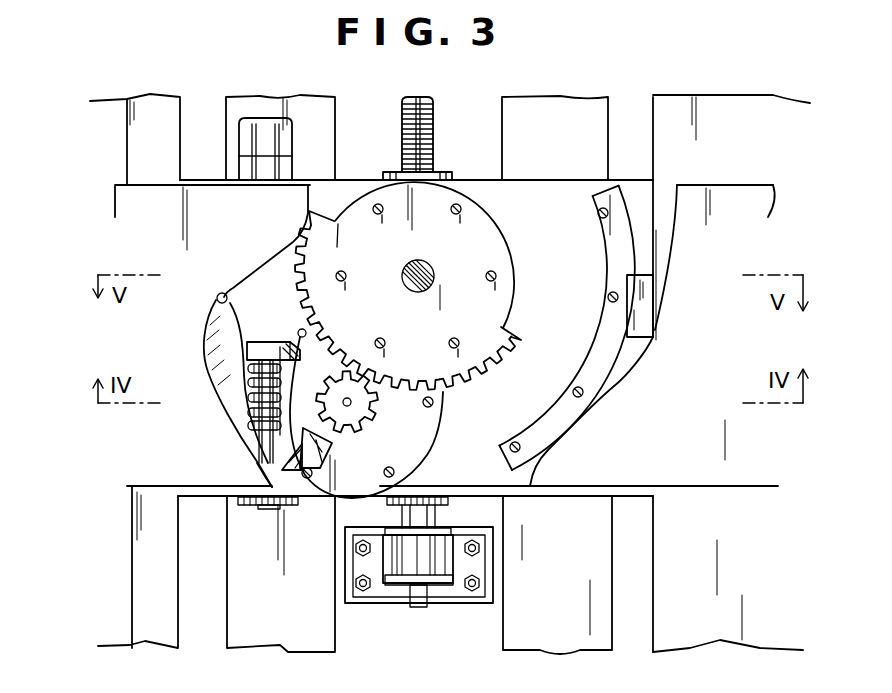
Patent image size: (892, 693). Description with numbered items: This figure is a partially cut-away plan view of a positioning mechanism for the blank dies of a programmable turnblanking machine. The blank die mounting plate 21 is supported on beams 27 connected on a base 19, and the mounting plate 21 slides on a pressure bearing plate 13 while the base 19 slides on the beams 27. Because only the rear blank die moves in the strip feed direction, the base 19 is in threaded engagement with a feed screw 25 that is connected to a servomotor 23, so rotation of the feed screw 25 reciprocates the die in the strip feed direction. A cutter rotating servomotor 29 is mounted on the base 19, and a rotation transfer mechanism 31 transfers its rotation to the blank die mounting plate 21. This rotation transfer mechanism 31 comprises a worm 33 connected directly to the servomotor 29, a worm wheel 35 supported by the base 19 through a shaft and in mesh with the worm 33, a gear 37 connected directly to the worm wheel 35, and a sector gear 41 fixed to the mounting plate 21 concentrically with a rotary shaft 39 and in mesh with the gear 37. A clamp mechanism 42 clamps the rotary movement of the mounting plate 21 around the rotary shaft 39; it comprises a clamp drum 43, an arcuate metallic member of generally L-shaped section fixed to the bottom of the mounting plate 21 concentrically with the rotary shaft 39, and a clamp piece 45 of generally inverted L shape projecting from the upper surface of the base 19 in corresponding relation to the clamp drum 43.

The pressure bearing plate 13 is at (152, 108).
The base 19 is at (480, 178).
The blank die mounting plate 21 is at (130, 195).
The servomotor 23 is at (440, 590).
The feed screw 25 is at (438, 84).
The beams 27 is at (545, 107).
The cutter rotating servomotor 29 is at (292, 143).
The rotation transfer mechanism 31 is at (293, 313).
The worm 33 is at (243, 432).
The worm wheel 35 is at (300, 332).
The gear 37 is at (381, 416).
The rotary shaft 39 is at (434, 268).
The sector gear 41 is at (465, 390).
The clamp mechanism 42 is at (645, 266).
The clamp drum 43 is at (223, 367).
The clamp piece 45 is at (647, 325).